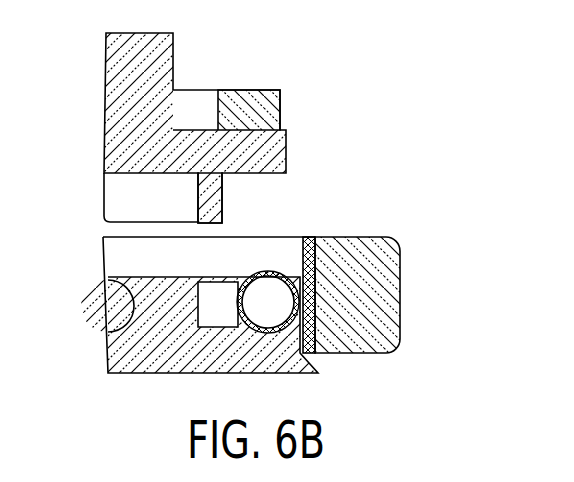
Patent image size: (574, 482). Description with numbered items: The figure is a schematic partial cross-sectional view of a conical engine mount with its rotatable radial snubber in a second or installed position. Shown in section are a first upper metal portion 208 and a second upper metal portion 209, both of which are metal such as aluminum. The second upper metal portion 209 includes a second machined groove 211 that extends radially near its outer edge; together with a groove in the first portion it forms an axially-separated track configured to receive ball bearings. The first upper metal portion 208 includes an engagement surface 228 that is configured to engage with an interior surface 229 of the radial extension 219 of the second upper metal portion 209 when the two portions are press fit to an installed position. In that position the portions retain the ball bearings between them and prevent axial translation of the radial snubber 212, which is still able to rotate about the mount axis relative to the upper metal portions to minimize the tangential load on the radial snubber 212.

The first upper metal portion 208 is at (127, 354).
The second upper metal portion 209 is at (125, 113).
The second machined groove 211 is at (268, 178).
The radial snubber 212 is at (363, 300).
The radial extension 219 is at (207, 196).
The engagement surface 228 is at (205, 306).
The interior surface 229 is at (190, 199).